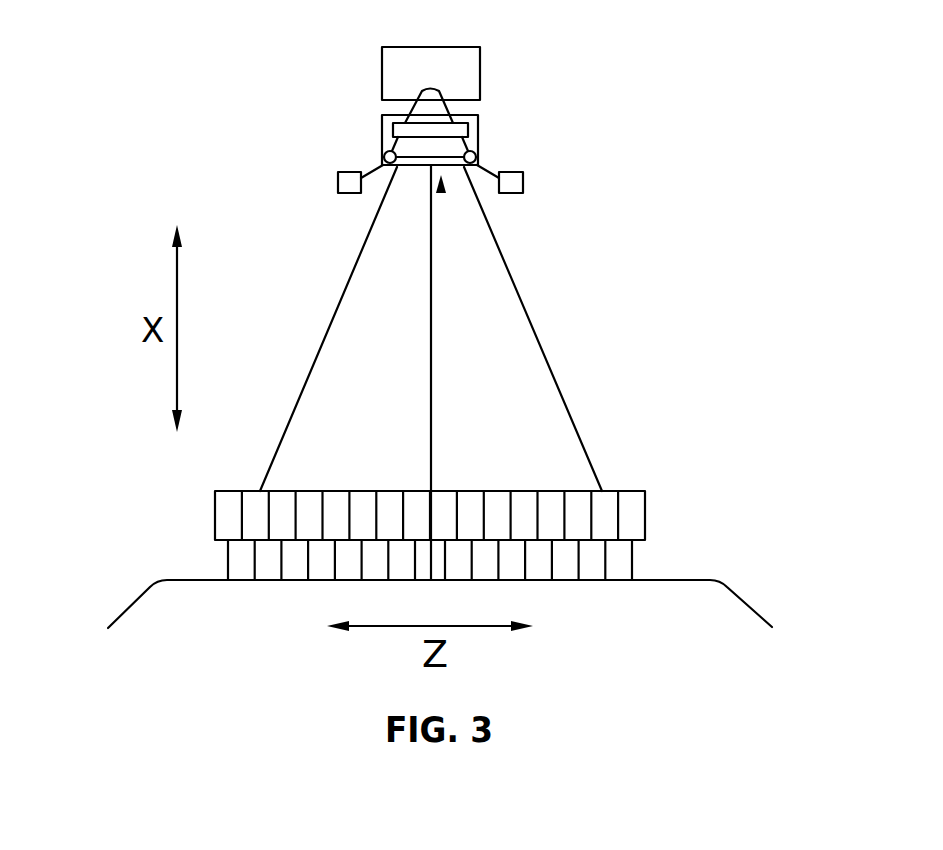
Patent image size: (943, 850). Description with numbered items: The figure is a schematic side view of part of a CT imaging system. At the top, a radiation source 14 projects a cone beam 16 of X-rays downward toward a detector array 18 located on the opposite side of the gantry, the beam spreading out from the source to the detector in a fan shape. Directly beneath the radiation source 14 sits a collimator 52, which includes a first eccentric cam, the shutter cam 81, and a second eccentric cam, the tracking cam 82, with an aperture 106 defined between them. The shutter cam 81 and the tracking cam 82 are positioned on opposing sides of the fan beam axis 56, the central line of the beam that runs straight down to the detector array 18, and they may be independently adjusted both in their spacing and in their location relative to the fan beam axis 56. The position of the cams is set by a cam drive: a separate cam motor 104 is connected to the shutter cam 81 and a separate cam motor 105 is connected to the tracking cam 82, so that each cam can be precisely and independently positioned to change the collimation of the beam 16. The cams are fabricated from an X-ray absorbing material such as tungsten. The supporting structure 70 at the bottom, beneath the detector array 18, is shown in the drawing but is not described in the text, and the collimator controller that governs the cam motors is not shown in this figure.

The radiation source 14 is at (448, 46).
The collimator 52 is at (590, 163).
The shutter cam 81 is at (388, 150).
The tracking cam 82 is at (472, 150).
The cam motor 104 is at (348, 194).
The cam motor 105 is at (513, 194).
The aperture 106 is at (441, 192).
The cone beam 16 is at (522, 284).
The fan beam axis 56 is at (437, 431).
The detector array 18 is at (654, 513).
The table 70 is at (132, 605).